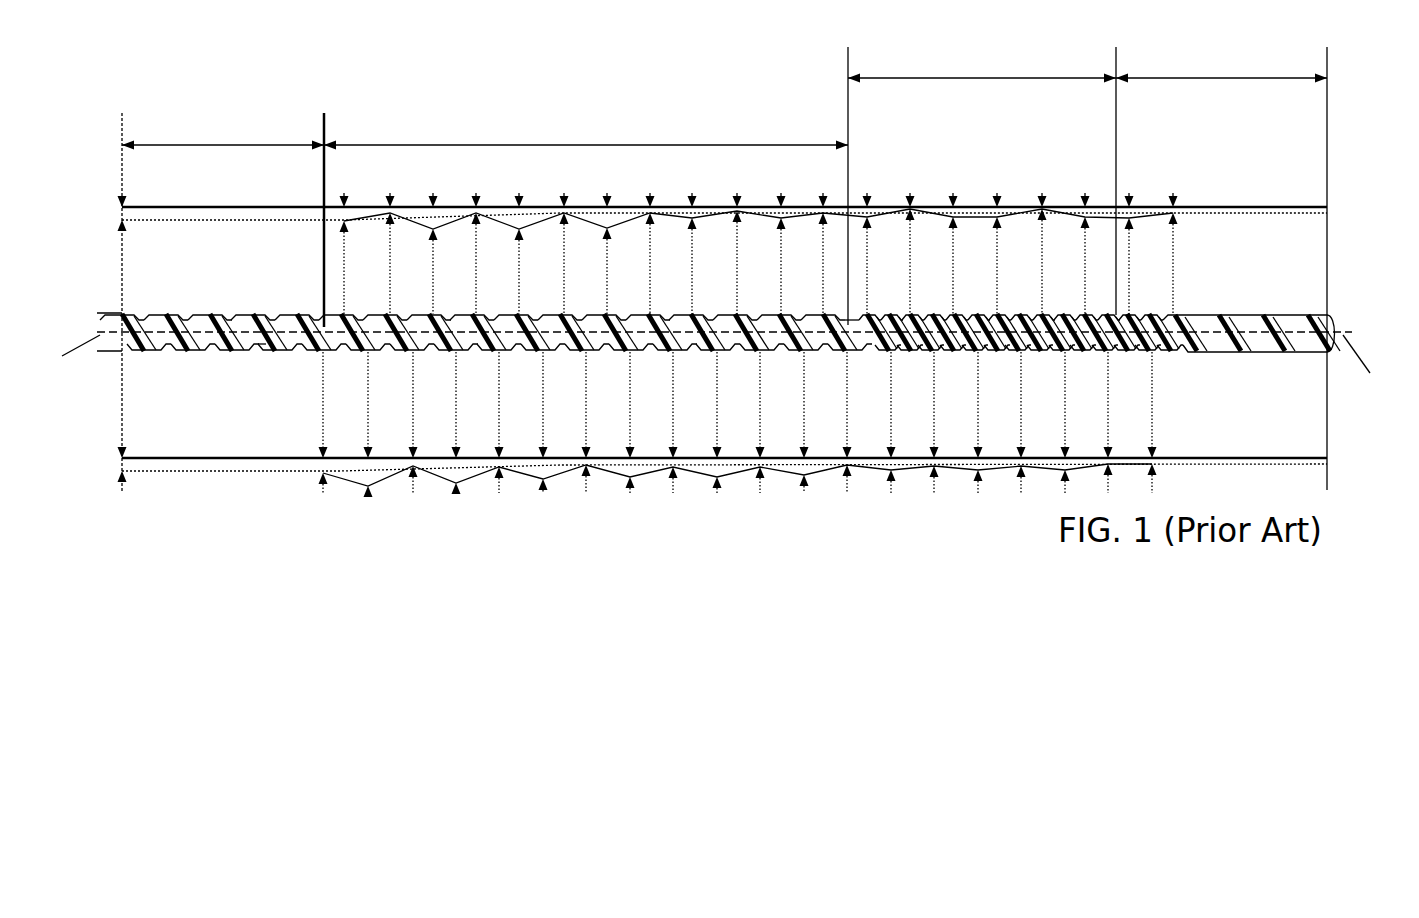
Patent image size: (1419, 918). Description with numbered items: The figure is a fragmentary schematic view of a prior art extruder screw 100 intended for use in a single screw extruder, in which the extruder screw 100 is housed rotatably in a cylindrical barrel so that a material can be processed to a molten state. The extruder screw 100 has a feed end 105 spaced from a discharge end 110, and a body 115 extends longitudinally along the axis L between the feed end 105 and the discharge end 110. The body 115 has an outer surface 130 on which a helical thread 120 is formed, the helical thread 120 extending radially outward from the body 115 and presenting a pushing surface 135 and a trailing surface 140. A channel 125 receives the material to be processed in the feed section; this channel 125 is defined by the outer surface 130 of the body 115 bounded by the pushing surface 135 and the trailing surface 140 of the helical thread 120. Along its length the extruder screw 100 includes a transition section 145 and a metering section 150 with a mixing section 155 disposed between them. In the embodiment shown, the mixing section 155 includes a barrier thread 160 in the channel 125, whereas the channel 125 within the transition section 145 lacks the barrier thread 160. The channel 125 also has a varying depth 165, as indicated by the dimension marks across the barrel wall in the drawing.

The extruder screw 100 is at (183, 83).
The feed end 105 is at (118, 312).
The discharge end 110 is at (1337, 318).
The body 115 is at (160, 345).
The helical thread 120 is at (188, 357).
The channel 125 is at (180, 348).
The outer surface 130 is at (262, 338).
The pushing surface 135 is at (267, 313).
The trailing surface 140 is at (288, 313).
The transition section 145 is at (620, 116).
The metering section 150 is at (1240, 46).
The mixing section 155 is at (1003, 22).
The barrier thread 160 is at (908, 350).
The varying depth 165 is at (112, 220).